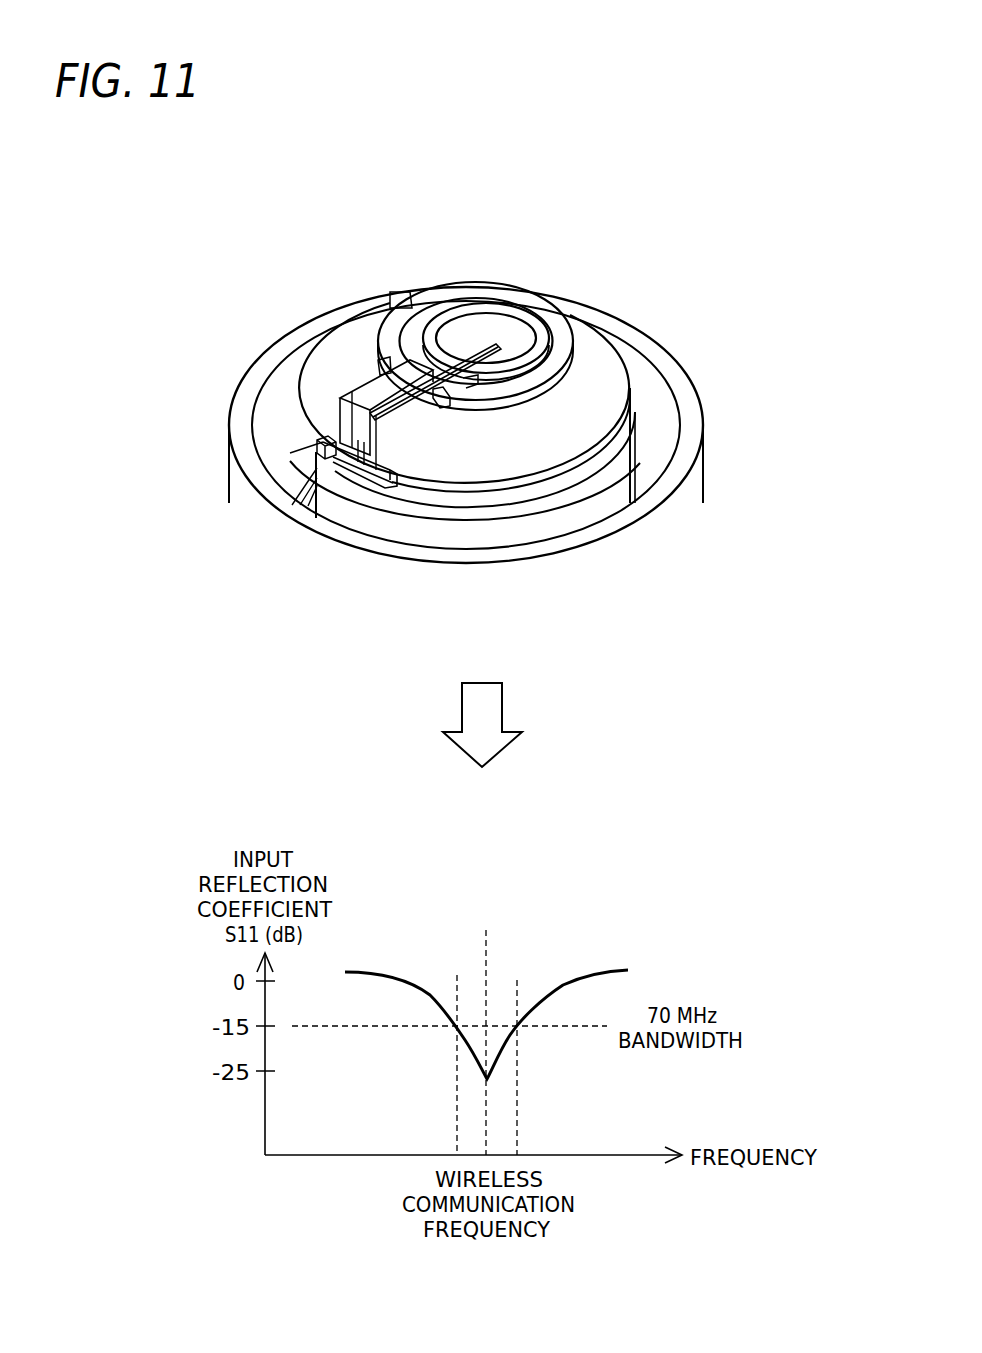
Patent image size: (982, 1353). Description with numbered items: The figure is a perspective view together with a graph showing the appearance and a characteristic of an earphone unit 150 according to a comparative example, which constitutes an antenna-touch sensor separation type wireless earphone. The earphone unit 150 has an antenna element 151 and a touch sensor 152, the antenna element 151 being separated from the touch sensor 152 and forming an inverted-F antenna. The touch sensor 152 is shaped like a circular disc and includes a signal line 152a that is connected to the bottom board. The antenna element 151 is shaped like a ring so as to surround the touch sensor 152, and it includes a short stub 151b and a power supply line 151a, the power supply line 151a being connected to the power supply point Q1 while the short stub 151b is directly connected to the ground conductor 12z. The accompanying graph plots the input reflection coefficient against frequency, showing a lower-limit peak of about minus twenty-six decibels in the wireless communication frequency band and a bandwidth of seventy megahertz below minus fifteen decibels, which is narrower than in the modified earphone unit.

The earphone unit 150 is at (220, 326).
The antenna element 151 is at (448, 303).
The touch sensor 152 is at (520, 330).
The signal line 152a is at (430, 398).
The power supply line 151a is at (312, 430).
The short stub 151b is at (346, 430).
The power supply point Q1 is at (317, 450).
The ground conductor 12z is at (593, 412).